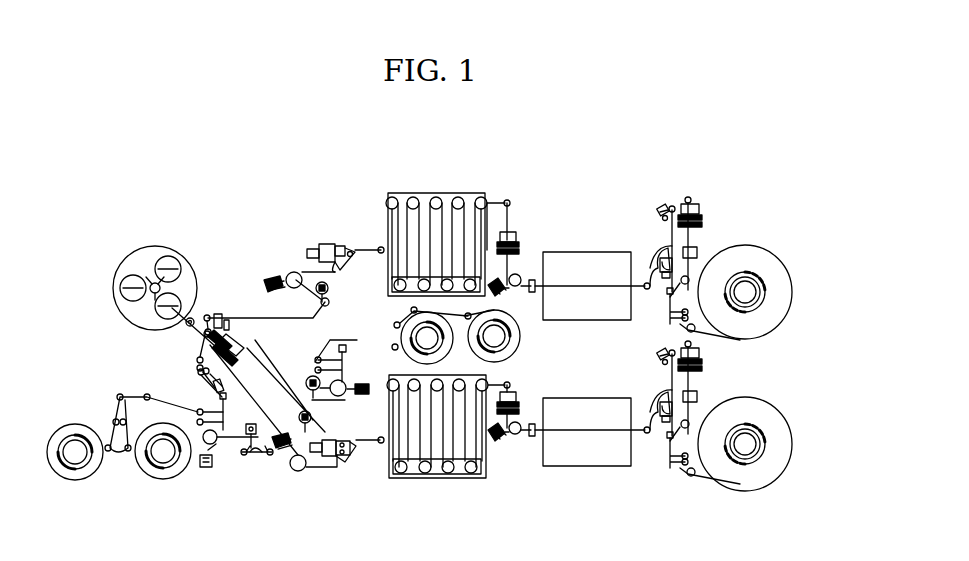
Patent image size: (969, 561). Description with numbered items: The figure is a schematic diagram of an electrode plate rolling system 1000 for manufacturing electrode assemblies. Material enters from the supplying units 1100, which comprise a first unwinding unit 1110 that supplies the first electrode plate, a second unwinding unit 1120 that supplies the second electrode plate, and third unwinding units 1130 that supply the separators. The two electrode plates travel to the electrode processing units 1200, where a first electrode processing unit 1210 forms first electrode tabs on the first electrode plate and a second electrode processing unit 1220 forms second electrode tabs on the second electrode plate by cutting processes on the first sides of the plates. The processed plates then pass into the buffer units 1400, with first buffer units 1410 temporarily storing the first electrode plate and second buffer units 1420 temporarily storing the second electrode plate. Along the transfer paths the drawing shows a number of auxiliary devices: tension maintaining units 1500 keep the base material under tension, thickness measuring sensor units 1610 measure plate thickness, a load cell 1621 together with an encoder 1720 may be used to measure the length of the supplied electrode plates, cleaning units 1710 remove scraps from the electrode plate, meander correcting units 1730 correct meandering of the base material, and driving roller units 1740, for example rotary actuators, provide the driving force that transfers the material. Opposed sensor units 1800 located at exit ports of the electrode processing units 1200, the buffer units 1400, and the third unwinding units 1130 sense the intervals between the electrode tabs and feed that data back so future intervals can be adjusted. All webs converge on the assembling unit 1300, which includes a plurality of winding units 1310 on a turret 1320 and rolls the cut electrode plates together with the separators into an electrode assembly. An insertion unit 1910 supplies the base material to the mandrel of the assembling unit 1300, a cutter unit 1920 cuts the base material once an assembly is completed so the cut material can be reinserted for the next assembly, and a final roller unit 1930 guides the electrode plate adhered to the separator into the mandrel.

The electrode plate rolling system 1000 is at (93, 139).
The supplying units 1100 is at (53, 425).
The first unwinding unit 1110 is at (772, 282).
The second unwinding unit 1120 is at (772, 432).
The third unwinding units 1130 is at (148, 474).
The electrode processing units 1200 is at (562, 248).
The first electrode processing unit 1210 is at (594, 252).
The second electrode processing unit 1220 is at (612, 398).
The assembling unit 1300 is at (128, 247).
The winding units 1310 is at (156, 302).
The turret 1320 is at (118, 265).
The buffer units 1400 is at (415, 191).
The first buffer units 1410 is at (455, 196).
The second buffer units 1420 is at (418, 480).
The tension maintaining units 1500 is at (218, 400).
The thickness measuring sensor units 1610 is at (697, 250).
The load cell 1621 is at (531, 278).
The cleaning units 1710 is at (514, 232).
The encoders 1720 is at (198, 368).
The meander correcting units 1730 is at (330, 244).
The driving roller units 1740 is at (212, 445).
The opposed sensor units 1800 is at (204, 470).
The insertion units 1910 is at (225, 340).
The cutter units 1920 is at (206, 348).
The final roller units 1930 is at (205, 312).